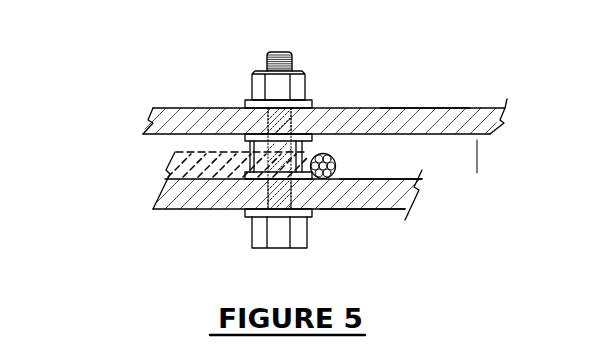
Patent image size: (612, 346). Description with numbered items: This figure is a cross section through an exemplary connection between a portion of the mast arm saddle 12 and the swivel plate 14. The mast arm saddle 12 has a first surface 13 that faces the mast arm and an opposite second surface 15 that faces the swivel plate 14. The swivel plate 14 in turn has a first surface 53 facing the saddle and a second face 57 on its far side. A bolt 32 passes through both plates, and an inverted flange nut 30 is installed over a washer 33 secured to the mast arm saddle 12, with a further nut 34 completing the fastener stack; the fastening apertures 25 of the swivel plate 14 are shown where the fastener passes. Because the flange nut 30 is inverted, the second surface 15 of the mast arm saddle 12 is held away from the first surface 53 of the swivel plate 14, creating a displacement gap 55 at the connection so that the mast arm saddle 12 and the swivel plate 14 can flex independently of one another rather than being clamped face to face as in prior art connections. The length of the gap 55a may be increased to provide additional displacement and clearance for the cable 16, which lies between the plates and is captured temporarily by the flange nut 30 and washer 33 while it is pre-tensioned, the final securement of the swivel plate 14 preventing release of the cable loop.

The mast arm saddle 12 is at (368, 198).
The first surface 13 is at (348, 210).
The swivel plate 14 is at (457, 119).
The second surface 15 is at (375, 179).
The cable 16 is at (333, 160).
The fastening apertures 25 is at (305, 112).
The inverted flange nut 30 is at (247, 131).
The bolts 32 is at (262, 233).
The washer 33 is at (310, 99).
The upper nut 34 is at (298, 83).
The first surface of the swivel plate 53 is at (428, 137).
The displacement gap 55 is at (478, 157).
The gap 55a is at (165, 152).
The second face of the swivel plate 57 is at (417, 108).